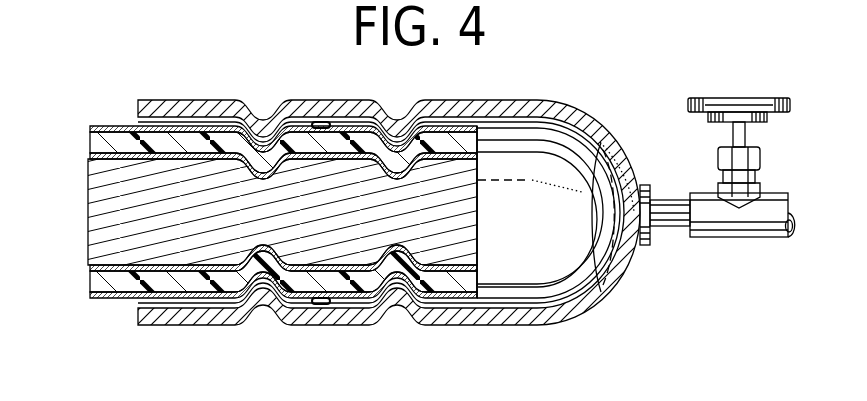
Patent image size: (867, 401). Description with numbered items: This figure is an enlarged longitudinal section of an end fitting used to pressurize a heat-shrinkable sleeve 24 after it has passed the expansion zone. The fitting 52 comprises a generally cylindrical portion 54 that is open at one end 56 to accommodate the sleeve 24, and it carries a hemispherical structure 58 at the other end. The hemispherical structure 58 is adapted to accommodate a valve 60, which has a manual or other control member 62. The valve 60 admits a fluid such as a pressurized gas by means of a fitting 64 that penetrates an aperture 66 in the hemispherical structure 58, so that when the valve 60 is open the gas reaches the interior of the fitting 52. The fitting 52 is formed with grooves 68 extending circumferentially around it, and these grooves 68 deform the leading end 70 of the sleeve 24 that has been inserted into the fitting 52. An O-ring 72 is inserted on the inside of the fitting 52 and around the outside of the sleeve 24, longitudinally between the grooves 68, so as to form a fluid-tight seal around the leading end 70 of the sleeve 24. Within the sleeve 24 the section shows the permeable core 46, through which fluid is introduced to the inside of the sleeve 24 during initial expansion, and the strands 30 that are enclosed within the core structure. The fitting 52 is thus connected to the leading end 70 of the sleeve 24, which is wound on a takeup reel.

The heat-shrinkable sleeve 24 is at (110, 284).
The strands 30 is at (104, 218).
The permeable core 46 is at (481, 216).
The fitting 52 is at (389, 218).
The cylindrical portion 54 is at (521, 70).
The open end 56 is at (137, 122).
The hemispherical structure 58 is at (607, 245).
The valve 60 is at (741, 214).
The control member 62 is at (731, 101).
The fitting 64 is at (673, 207).
The aperture 66 is at (616, 208).
The grooves 68 is at (263, 120).
The leading end 70 is at (479, 266).
The O-ring 72 is at (323, 304).